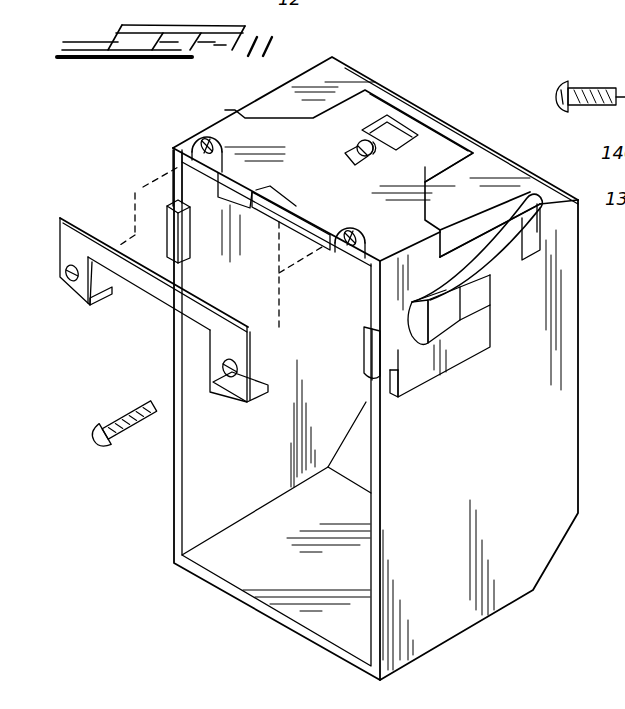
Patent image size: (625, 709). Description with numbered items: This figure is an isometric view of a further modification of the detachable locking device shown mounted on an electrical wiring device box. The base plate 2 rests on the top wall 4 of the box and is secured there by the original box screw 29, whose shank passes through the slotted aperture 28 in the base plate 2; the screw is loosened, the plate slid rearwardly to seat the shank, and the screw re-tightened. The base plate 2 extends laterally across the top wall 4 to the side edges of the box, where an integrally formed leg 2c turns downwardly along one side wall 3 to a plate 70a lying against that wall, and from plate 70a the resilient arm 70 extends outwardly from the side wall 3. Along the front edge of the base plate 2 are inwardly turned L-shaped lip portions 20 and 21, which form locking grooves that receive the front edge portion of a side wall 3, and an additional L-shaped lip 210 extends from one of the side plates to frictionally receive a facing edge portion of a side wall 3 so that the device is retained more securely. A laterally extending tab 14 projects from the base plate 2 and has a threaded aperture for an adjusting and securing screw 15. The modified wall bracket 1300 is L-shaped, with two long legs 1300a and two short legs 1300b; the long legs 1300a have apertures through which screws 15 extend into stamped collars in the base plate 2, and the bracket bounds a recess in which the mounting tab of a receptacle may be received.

The base plate 2 is at (323, 125).
The integrally formed leg 2c is at (418, 262).
The side wall 3 is at (223, 440).
The top wall 4 is at (480, 176).
The laterally extending tab 14 is at (211, 133).
The adjusting and securing screw 15 is at (583, 91).
The L-shaped lip portion 20 is at (316, 245).
The L-shaped lip portion 21 is at (176, 166).
The slotted aperture 28 is at (397, 135).
The existing screw 29 is at (358, 140).
The resilient finger or arm 70 is at (497, 270).
The plate 70a is at (400, 385).
The L-shaped lip 210 is at (167, 213).
The modified wall bracket 1300 is at (75, 218).
The long leg 1300a is at (253, 330).
The short leg 1300b is at (267, 393).